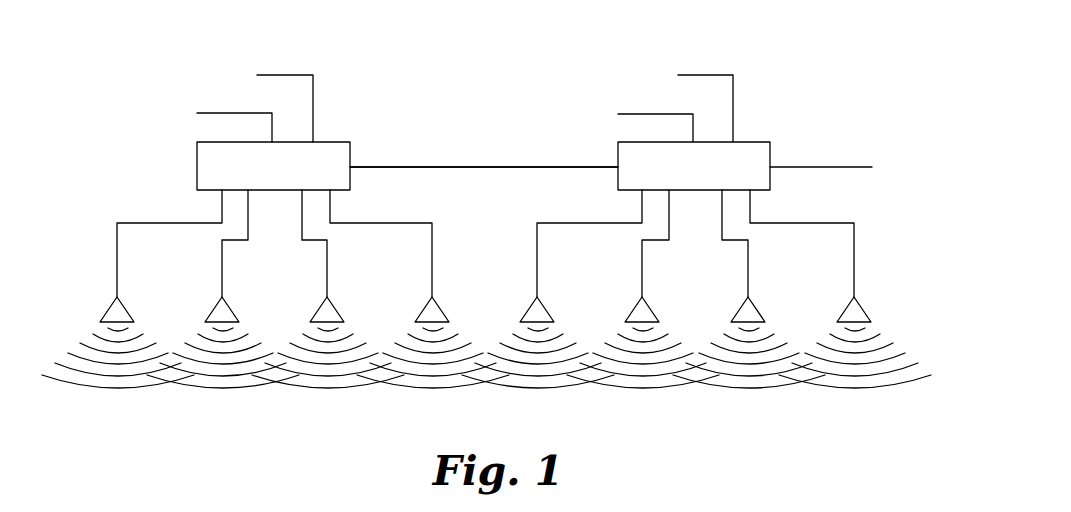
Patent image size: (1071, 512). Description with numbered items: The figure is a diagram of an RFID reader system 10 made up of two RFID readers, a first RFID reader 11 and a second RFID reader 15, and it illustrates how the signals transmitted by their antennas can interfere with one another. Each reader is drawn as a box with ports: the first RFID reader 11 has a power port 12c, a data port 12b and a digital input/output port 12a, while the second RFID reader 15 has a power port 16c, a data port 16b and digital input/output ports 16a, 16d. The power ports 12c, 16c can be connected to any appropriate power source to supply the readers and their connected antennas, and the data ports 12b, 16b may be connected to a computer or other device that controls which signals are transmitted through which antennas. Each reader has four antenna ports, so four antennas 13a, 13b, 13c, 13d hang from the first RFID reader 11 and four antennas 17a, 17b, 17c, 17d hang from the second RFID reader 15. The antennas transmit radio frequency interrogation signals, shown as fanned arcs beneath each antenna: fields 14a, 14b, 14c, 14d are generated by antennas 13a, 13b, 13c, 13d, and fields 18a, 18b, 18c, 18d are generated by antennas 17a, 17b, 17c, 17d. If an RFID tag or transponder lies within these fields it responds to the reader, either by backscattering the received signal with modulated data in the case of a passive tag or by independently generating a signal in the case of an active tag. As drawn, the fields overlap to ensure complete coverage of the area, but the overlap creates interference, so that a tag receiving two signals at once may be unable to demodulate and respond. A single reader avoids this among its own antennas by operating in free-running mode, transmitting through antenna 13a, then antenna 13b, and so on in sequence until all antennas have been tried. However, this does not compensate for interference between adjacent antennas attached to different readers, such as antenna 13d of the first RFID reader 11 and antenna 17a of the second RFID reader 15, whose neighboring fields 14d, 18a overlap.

The RFID reader system 10 is at (815, 33).
The RFID reader 11 is at (207, 163).
The digital input/output port 12a is at (351, 166).
The data port 12b is at (212, 113).
The power port 12c is at (283, 75).
The antenna 13a is at (109, 308).
The antenna 13b is at (214, 308).
The antenna 13c is at (319, 308).
The antenna 13d is at (424, 308).
The interrogation signal 14a is at (119, 390).
The interrogation signal 14b is at (227, 390).
The interrogation signal 14c is at (337, 390).
The interrogation signal 14d is at (447, 390).
The RFID reader 15 is at (752, 147).
The digital input/output port 16a is at (617, 165).
The data port 16b is at (633, 113).
The power port 16c is at (703, 75).
The digital input/output port 16d is at (771, 166).
The antenna 17a is at (529, 308).
The antenna 17b is at (634, 308).
The antenna 17c is at (740, 308).
The antenna 17d is at (846, 308).
The interrogation signal 18a is at (549, 390).
The interrogation signal 18b is at (651, 390).
The interrogation signal 18c is at (755, 390).
The interrogation signal 18d is at (863, 390).